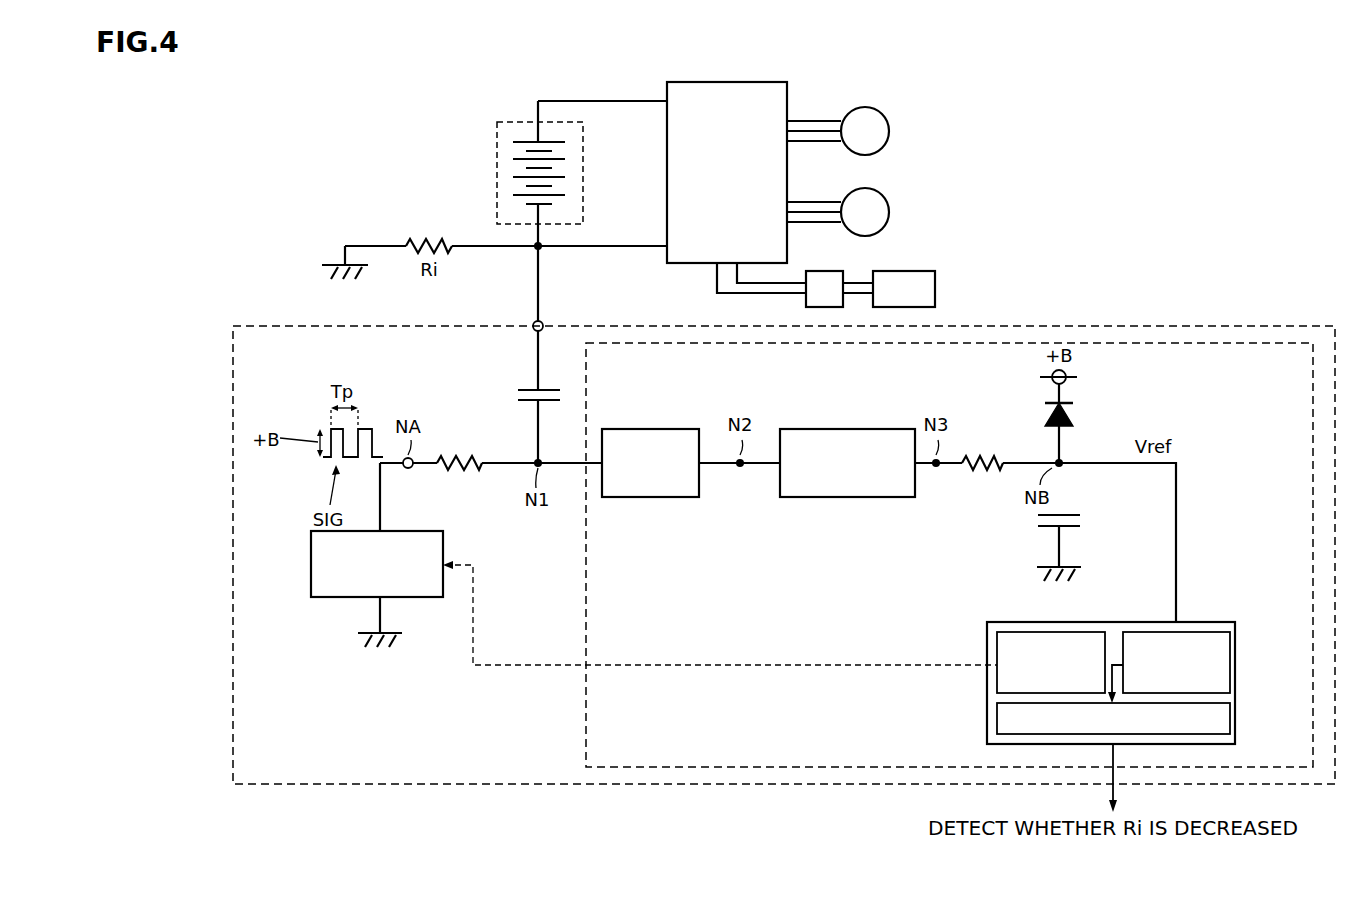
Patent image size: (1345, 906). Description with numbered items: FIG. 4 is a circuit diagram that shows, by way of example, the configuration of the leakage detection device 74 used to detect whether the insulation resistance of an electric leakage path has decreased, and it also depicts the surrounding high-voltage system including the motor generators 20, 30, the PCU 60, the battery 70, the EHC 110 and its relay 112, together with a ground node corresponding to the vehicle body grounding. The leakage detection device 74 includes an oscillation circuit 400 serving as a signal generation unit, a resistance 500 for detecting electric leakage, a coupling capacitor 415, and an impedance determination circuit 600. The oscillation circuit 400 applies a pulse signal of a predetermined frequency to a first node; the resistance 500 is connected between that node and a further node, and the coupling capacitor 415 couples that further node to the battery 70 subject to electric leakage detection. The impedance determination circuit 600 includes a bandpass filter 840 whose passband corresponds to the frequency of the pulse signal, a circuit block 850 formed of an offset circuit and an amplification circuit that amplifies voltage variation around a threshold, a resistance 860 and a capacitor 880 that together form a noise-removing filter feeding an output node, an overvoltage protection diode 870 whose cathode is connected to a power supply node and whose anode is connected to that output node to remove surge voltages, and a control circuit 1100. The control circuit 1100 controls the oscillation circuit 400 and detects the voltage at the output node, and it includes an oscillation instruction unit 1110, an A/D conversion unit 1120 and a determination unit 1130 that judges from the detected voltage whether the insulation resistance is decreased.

The motor generator 20 is at (889, 212).
The motor generator 30 is at (889, 131).
The PCU (power control unit) 60 is at (787, 93).
The battery 70 is at (583, 142).
The leakage detection device 74 is at (1030, 325).
The EHC (electrically heated catalyst) 110 is at (905, 271).
The relay / power supply circuit 112 is at (815, 271).
The oscillation circuit 400 is at (402, 531).
The coupling capacitor 415 is at (530, 388).
The resistance 500 is at (462, 455).
The impedance determination circuit 600 is at (1190, 343).
The bandpass filter 840 is at (627, 497).
The circuit block 850 is at (897, 497).
The resistance 860 is at (990, 452).
The overvoltage protection diode 870 is at (1075, 412).
The capacitor 880 is at (1075, 512).
The control circuit 1100 is at (1111, 670).
The oscillation instruction unit 1110 is at (997, 645).
The A/D conversion unit 1120 is at (1230, 663).
The determination unit 1130 is at (997, 718).